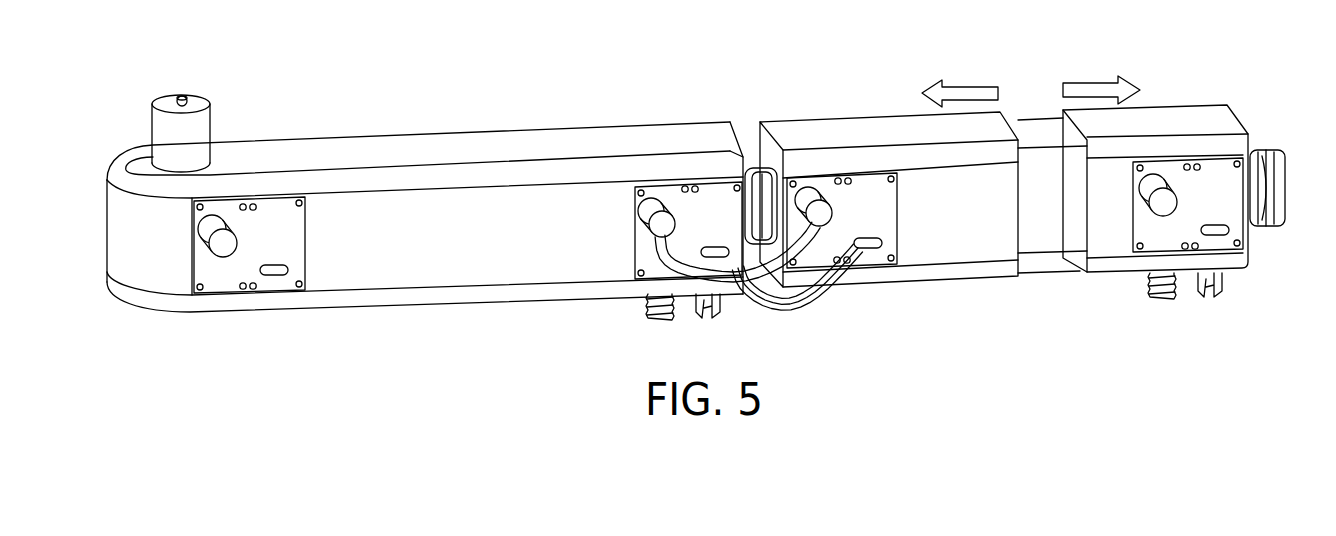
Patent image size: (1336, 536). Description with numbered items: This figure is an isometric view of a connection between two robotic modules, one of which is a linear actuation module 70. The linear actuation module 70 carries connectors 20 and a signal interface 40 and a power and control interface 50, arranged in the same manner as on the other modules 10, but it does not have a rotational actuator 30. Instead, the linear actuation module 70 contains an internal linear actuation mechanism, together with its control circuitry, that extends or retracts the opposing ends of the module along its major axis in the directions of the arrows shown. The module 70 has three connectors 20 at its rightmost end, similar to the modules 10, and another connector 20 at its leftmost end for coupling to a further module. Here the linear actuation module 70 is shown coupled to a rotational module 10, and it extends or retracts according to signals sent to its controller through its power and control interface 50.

The module 10 is at (368, 263).
The connector 20 is at (1273, 147).
The rotational actuator 30 is at (211, 119).
The signal interface 40 is at (710, 247).
The power and control interface 50 is at (651, 204).
The linear actuation module 70 is at (777, 117).